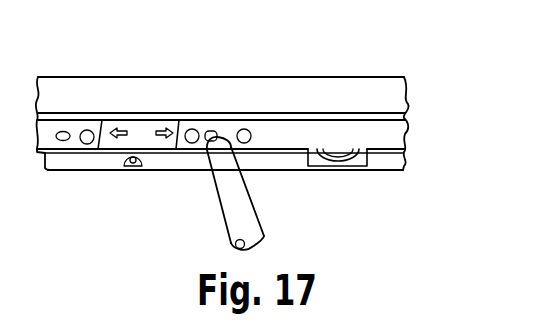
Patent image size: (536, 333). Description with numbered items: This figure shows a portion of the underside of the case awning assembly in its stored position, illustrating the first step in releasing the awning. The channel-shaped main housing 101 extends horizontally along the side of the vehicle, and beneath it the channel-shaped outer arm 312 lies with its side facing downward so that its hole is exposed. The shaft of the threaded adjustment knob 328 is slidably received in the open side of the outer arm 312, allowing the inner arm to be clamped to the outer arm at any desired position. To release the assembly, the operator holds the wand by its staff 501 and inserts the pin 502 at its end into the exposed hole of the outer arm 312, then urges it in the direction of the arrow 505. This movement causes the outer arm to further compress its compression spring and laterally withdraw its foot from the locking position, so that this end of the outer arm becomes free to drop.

The main housing 101 is at (97, 170).
The outer arm 312 is at (383, 138).
The adjustment knob 328 is at (335, 149).
The arrow 505 is at (163, 127).
The pin 502 is at (205, 147).
The staff 501 is at (230, 224).